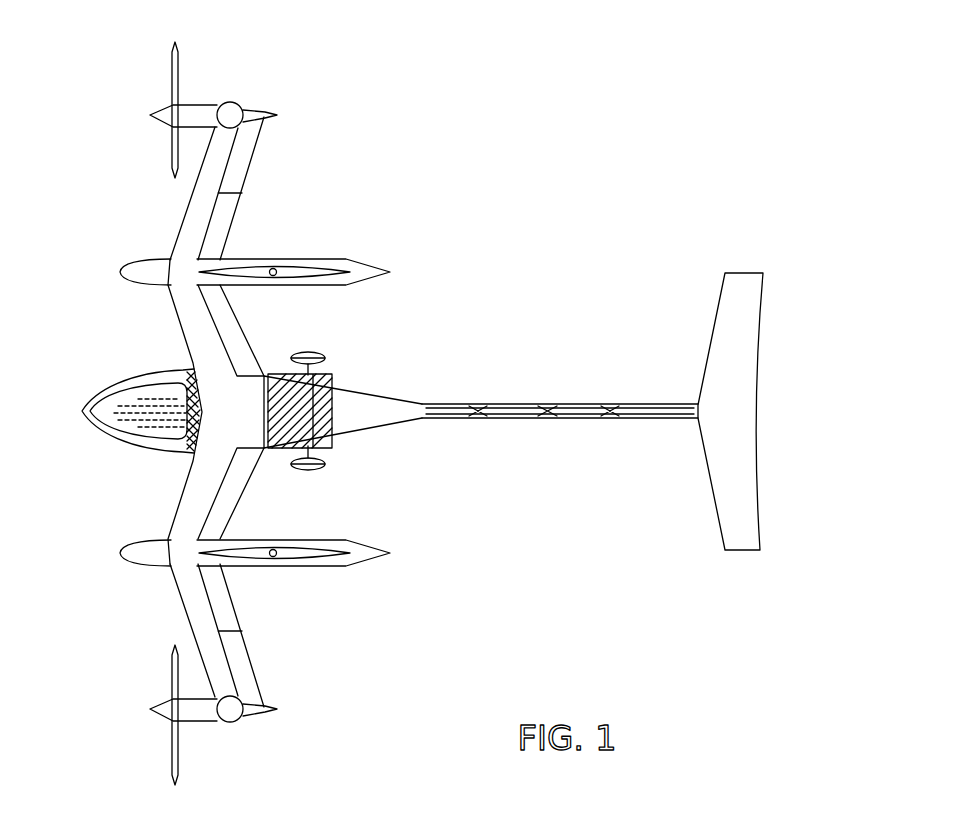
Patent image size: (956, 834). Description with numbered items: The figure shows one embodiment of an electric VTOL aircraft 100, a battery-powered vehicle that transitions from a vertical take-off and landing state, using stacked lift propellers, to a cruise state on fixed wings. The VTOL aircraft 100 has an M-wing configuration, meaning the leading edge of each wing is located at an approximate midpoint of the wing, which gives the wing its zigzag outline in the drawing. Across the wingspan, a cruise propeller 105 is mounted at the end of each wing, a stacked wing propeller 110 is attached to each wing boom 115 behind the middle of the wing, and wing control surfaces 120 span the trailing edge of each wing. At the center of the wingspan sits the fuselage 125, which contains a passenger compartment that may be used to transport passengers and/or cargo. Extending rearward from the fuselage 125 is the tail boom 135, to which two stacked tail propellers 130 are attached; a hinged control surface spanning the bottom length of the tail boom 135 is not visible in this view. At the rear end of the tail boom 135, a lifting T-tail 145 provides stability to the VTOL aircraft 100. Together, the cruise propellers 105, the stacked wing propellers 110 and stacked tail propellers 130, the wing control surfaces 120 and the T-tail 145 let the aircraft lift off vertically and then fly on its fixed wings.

The electric VTOL aircraft 100 is at (420, 413).
The cruise propeller 105 is at (140, 120).
The stacked wing propeller 110 is at (327, 279).
The wing boom 115 is at (110, 276).
The wing control surfaces 120 is at (256, 197).
The fuselage 125 is at (68, 414).
The stacked tail propellers 130 is at (482, 393).
The tail boom 135 is at (549, 431).
The lifting T-tail 145 is at (772, 409).